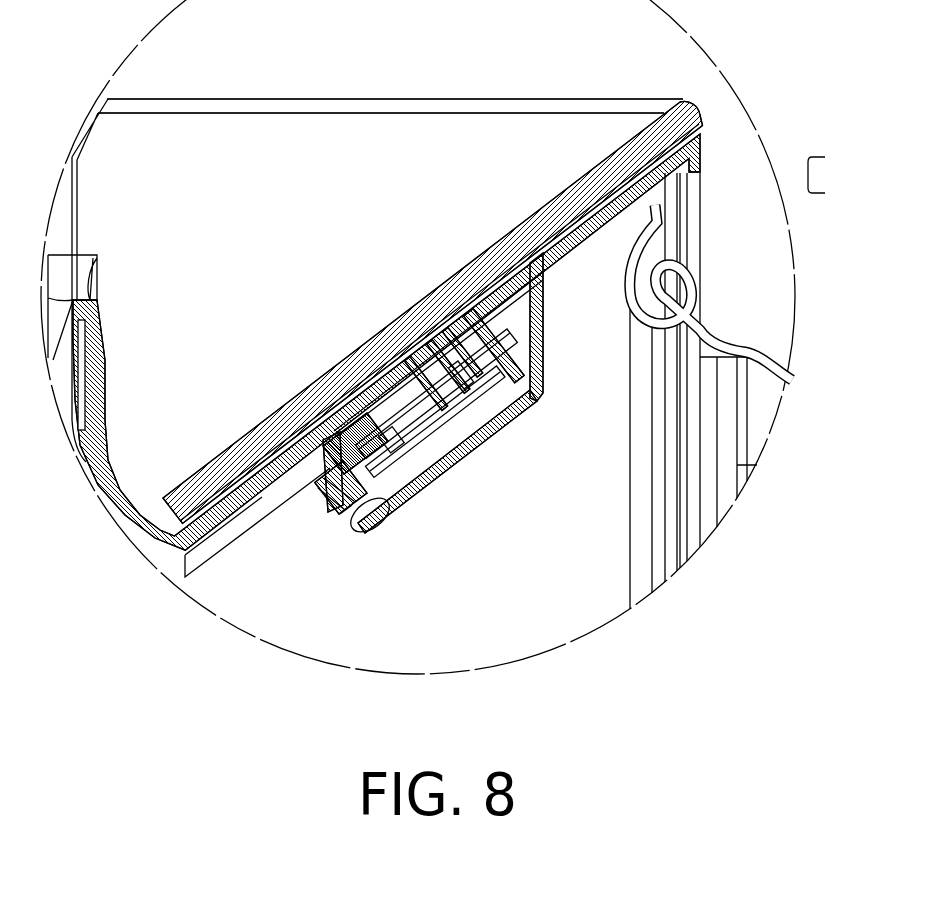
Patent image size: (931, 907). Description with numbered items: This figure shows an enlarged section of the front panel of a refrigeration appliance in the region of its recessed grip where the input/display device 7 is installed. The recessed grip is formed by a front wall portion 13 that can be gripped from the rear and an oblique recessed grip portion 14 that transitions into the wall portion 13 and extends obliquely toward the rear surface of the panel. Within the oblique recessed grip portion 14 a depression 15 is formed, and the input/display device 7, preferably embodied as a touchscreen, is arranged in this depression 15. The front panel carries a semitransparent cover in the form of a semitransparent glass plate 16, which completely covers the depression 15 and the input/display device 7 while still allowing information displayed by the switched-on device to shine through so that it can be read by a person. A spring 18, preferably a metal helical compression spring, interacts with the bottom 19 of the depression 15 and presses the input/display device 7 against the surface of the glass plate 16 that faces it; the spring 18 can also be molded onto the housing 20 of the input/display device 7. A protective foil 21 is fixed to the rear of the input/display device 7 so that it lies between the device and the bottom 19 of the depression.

The input/display device 7 is at (478, 382).
The front wall portion 13 is at (93, 368).
The oblique recessed grip portion 14 is at (266, 300).
The depression 15 is at (520, 333).
The semitransparent glass plate 16 is at (512, 245).
The spring 18 is at (320, 500).
The bottom 19 is at (373, 530).
The housing 20 is at (320, 412).
The protective foil 21 is at (443, 443).